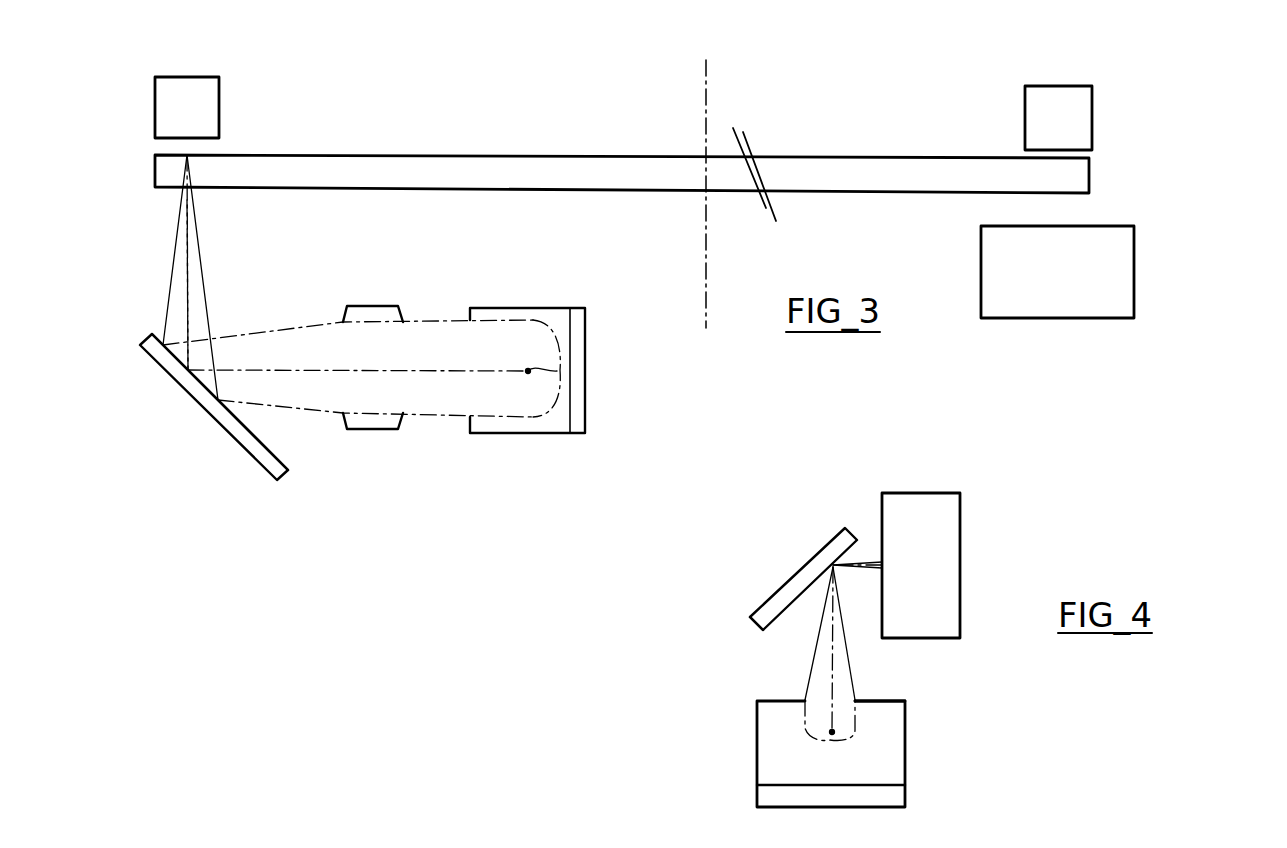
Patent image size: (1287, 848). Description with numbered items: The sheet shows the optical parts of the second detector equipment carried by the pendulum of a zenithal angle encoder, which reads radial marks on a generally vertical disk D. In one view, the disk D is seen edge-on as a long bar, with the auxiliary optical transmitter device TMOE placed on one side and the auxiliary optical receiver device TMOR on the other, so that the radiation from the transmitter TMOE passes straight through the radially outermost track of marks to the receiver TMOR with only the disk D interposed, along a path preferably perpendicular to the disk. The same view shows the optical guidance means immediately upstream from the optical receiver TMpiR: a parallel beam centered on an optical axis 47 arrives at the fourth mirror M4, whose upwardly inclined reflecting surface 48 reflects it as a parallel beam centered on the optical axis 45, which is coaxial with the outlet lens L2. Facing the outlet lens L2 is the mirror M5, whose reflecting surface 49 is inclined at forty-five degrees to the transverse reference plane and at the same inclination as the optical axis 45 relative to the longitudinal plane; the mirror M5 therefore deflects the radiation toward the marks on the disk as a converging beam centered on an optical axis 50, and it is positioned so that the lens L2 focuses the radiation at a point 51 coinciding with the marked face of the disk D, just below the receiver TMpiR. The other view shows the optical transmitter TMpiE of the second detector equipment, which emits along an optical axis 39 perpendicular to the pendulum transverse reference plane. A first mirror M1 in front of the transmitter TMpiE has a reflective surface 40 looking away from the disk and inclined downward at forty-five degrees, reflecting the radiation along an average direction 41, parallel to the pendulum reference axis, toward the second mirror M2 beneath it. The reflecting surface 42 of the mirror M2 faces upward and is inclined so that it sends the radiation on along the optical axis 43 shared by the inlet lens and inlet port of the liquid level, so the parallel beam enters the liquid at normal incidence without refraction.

In FIG. 4, the optical axis 39 is at (860, 550).
In FIG. 4, the reflective surface 40 is at (782, 622).
In FIG. 4, the average direction 41 is at (833, 668).
In FIG. 4, the reflecting surface 42 is at (887, 722).
In FIG. 4, the optical axis 43 is at (803, 743).
In FIG. 3, the optical axis 45 is at (433, 372).
In FIG. 3, the optical axis 47 is at (557, 371).
In FIG. 3, the reflecting surface 48 is at (558, 322).
In FIG. 3, the reflecting surface 49 is at (280, 451).
In FIG. 3, the optical axis 50 is at (187, 282).
In FIG. 3, the focal point 51 is at (188, 153).
In FIG. 3, the disk D is at (380, 155).
In FIG. 3, the outlet lens L2 is at (377, 302).
In FIG. 4, the first mirror M1 is at (810, 556).
In FIG. 4, the second mirror M2 is at (907, 763).
In FIG. 3, the fourth mirror M4 is at (540, 433).
In FIG. 3, the fifth mirror M5 is at (258, 467).
In FIG. 3, the optical receiver TMpiR is at (192, 77).
In FIG. 3, the auxiliary optical receiver device TMOR is at (1092, 113).
In FIG. 3, the auxiliary optical transmitter device TMOE is at (1134, 270).
In FIG. 4, the optical transmitter TMpiE is at (947, 493).